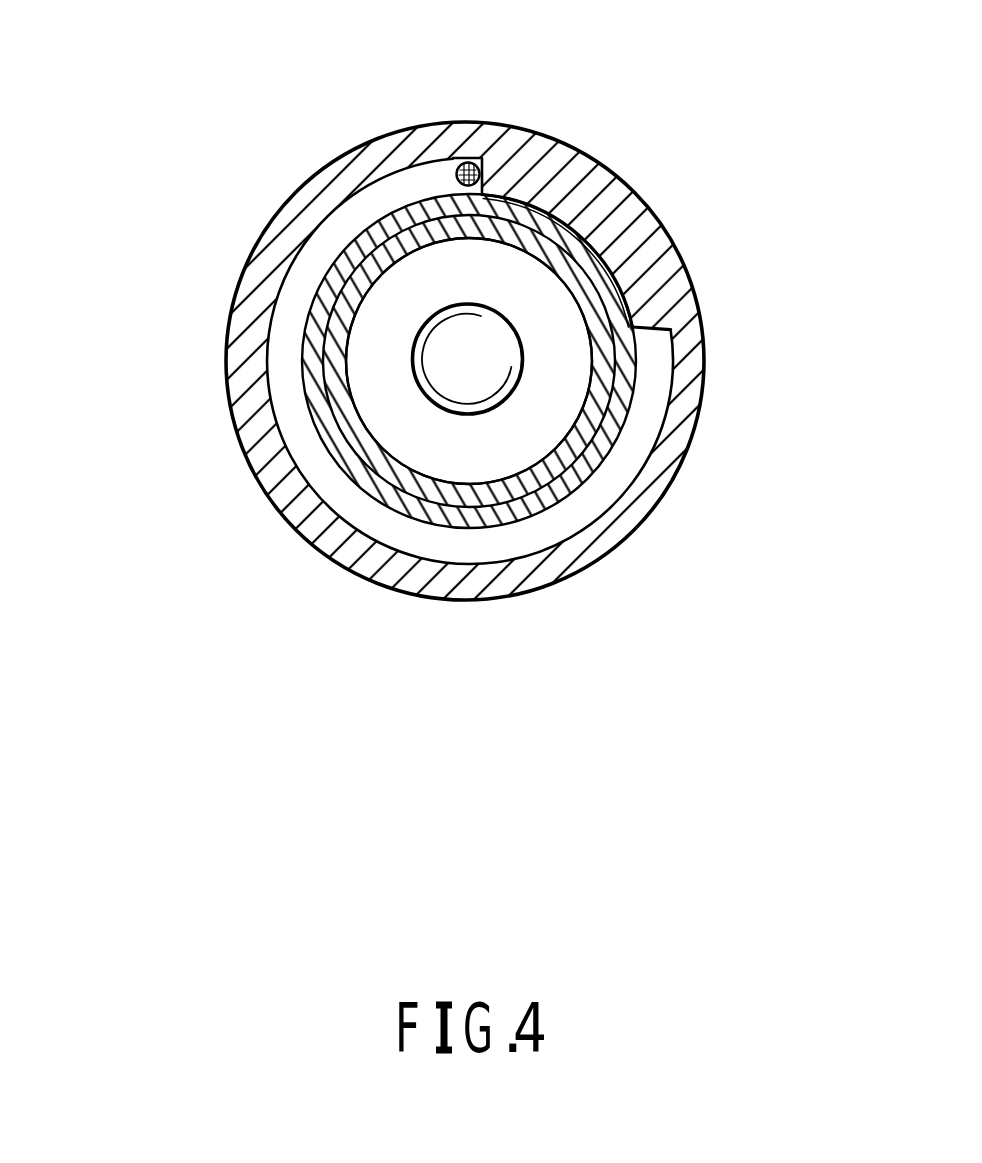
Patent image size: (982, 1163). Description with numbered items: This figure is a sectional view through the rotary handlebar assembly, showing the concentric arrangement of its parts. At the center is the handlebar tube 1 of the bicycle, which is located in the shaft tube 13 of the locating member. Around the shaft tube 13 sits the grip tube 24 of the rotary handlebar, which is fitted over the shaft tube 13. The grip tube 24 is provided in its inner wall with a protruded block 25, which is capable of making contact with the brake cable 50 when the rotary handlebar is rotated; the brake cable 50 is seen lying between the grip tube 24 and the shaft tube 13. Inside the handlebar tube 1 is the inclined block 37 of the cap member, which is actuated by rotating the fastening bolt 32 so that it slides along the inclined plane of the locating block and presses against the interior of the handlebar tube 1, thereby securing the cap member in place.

The handlebar tube 1 is at (577, 444).
The shaft tube 13 is at (338, 459).
The grip tube 24 is at (280, 215).
The protruded block 25 is at (652, 330).
The fastening bolt 32 is at (472, 402).
The inclined block 37 is at (366, 346).
The brake cable 50 is at (464, 161).